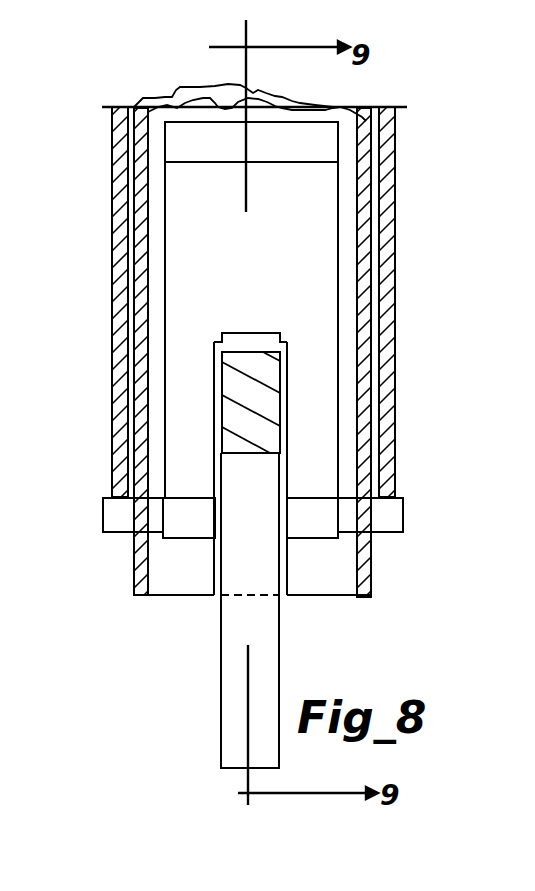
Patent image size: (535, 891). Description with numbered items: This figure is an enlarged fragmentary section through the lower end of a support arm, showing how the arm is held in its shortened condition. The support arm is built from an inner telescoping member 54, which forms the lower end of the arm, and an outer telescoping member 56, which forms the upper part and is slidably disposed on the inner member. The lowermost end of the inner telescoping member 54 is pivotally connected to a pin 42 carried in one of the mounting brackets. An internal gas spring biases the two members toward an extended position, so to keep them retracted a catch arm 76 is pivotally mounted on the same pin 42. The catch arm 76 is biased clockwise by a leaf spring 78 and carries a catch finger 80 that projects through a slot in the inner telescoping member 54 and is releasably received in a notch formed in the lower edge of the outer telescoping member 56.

The pin 42 is at (385, 518).
The inner telescoping member 54 is at (140, 307).
The outer telescoping member 56 is at (115, 260).
The catch arm 76 is at (242, 620).
The leaf spring 78 is at (187, 208).
The catch finger 80 is at (245, 363).